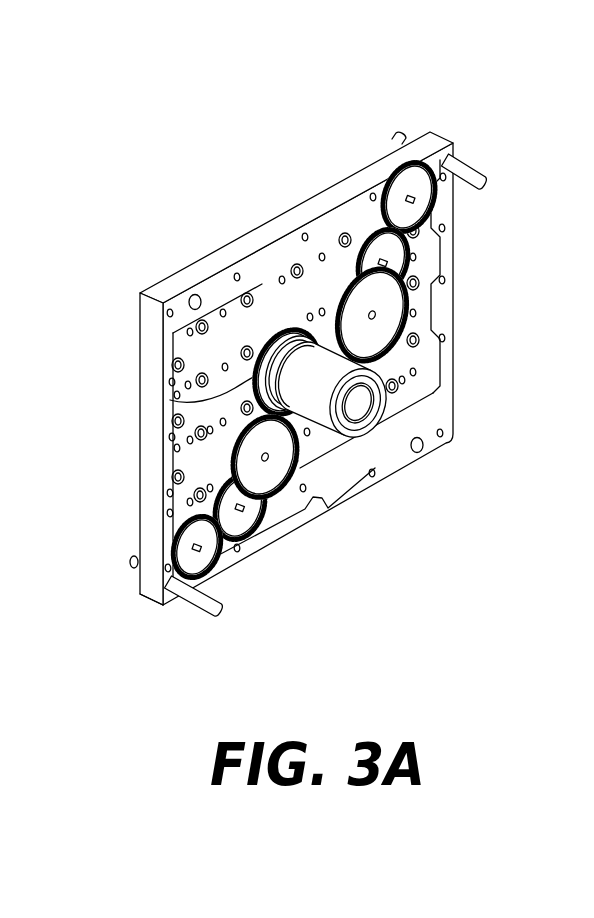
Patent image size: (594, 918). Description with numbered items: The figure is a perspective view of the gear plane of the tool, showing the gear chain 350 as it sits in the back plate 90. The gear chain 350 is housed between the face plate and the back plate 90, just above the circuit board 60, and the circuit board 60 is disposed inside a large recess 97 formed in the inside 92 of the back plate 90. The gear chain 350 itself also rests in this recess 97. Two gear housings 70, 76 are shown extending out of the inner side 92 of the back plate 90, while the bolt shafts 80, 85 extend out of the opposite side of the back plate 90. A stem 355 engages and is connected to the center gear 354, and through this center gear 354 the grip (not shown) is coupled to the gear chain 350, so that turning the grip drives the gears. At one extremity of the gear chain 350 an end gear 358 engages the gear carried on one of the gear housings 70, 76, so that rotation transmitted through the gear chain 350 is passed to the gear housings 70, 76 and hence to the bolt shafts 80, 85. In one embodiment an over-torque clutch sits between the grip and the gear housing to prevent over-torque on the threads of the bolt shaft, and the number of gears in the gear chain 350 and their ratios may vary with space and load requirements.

The circuit board 60 is at (263, 382).
The gear housing 70 is at (460, 163).
The gear housing 76 is at (183, 608).
The bolt shaft 80 is at (404, 131).
The bolt shaft 85 is at (131, 560).
The back plate 90 is at (175, 290).
The inside of back plate 92 is at (443, 403).
The recess 97 is at (318, 457).
The gear chain 350 is at (267, 482).
The center gear 354 is at (170, 400).
The stem 355 is at (300, 322).
The end gear 358 is at (147, 594).